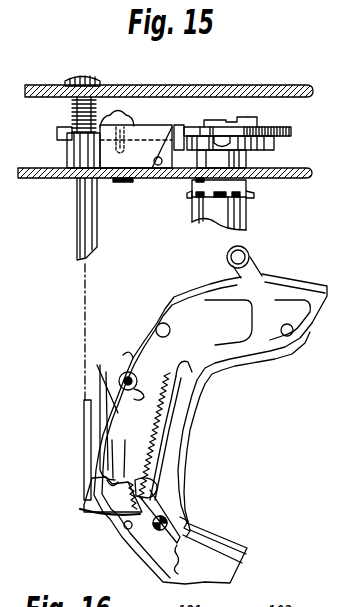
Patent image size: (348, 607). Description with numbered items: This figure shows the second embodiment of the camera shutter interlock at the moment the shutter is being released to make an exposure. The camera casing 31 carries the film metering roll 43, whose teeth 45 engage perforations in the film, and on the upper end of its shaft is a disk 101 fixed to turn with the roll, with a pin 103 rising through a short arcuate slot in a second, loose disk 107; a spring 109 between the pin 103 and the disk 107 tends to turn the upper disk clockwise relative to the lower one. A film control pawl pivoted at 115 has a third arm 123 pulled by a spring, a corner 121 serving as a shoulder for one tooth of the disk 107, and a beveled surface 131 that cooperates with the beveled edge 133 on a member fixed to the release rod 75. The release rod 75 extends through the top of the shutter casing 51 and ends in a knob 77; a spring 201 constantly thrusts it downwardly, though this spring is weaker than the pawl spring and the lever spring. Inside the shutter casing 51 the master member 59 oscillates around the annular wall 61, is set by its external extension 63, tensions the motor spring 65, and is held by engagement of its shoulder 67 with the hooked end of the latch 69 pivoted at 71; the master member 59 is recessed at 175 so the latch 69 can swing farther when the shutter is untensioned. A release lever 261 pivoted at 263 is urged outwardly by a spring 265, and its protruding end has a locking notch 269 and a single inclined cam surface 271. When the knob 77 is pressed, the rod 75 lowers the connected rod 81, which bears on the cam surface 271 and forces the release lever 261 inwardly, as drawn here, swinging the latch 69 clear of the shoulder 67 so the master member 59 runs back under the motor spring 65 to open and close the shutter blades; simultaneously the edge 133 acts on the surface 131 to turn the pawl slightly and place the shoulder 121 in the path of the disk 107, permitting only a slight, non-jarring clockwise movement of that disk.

The camera casing 31 is at (255, 86).
The knob 77 is at (76, 78).
The spring 201 is at (72, 114).
The third arm 123 is at (60, 140).
The release rod 75 is at (78, 236).
The pawl pivot 115 is at (112, 114).
The beveled surface 131 is at (165, 118).
The beveled edge 133 is at (158, 187).
The corner 121 is at (190, 128).
The second disk 107 is at (292, 131).
The spring 109 is at (238, 123).
The pin 103 is at (257, 122).
The disk 101 is at (276, 147).
The teeth 45 is at (252, 195).
The metering roll 43 is at (250, 221).
The shutter casing 51 is at (296, 282).
The extension 63 is at (229, 260).
The master member 59 is at (262, 337).
The annular wall 61 is at (197, 392).
The motor spring 65 is at (156, 440).
The spring 265 is at (134, 357).
The pivot 263 is at (137, 373).
The release lever 261 is at (104, 360).
The rod 81 is at (84, 451).
The locking notch 269 is at (113, 495).
The inclined cam surface 271 is at (83, 512).
The recess 175 is at (163, 490).
The latch pivot 71 is at (170, 537).
The shoulder 67 is at (186, 524).
The latch 69 is at (177, 562).